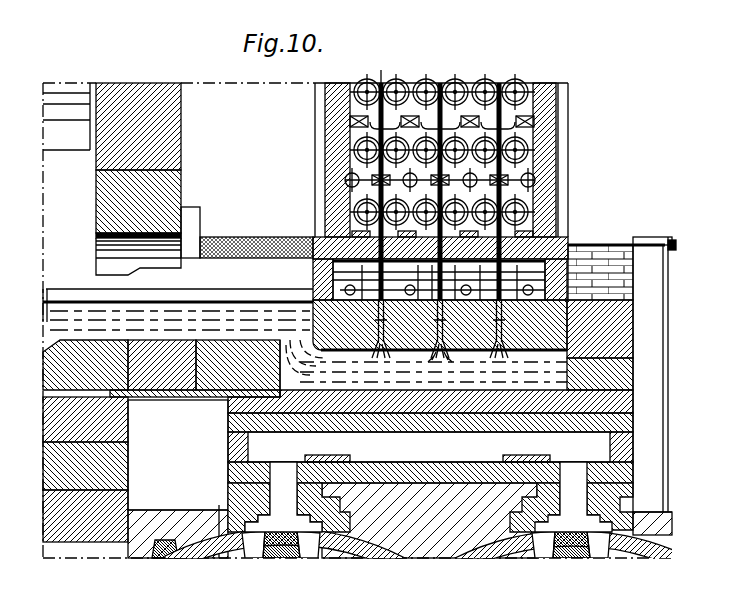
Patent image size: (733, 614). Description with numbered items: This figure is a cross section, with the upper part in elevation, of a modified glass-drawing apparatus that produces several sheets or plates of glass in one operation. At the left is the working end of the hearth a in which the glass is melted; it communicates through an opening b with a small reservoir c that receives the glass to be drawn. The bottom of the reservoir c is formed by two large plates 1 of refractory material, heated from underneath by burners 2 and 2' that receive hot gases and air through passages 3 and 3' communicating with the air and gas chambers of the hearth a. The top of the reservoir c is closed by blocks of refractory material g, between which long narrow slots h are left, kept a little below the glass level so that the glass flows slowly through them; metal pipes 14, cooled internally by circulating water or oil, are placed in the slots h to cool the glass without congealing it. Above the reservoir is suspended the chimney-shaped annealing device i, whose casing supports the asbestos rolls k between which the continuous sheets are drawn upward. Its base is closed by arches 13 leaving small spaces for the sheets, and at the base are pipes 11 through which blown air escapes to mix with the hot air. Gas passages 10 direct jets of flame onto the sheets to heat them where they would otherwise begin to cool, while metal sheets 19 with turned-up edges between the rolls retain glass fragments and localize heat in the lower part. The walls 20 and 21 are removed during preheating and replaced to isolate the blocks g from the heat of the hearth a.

The hearth a is at (357, 320).
The opening b is at (178, 304).
The small reservoir c is at (423, 368).
The blocks of refractory material g is at (440, 325).
The slots h is at (496, 327).
The annealing device i is at (535, 115).
The asbestos rolls k is at (350, 213).
The plates of refractory material 1 is at (430, 412).
The burner 2 is at (283, 497).
The burner 2' is at (573, 497).
The passage 3 is at (428, 552).
The passage 3' is at (453, 544).
The gas passages 10 is at (535, 178).
The pipes 11 is at (439, 279).
The arches 13 is at (556, 238).
The metal pipes 14 is at (430, 336).
The metal sheets 19 is at (350, 128).
The wall 20 is at (326, 279).
The wall 21 is at (556, 279).